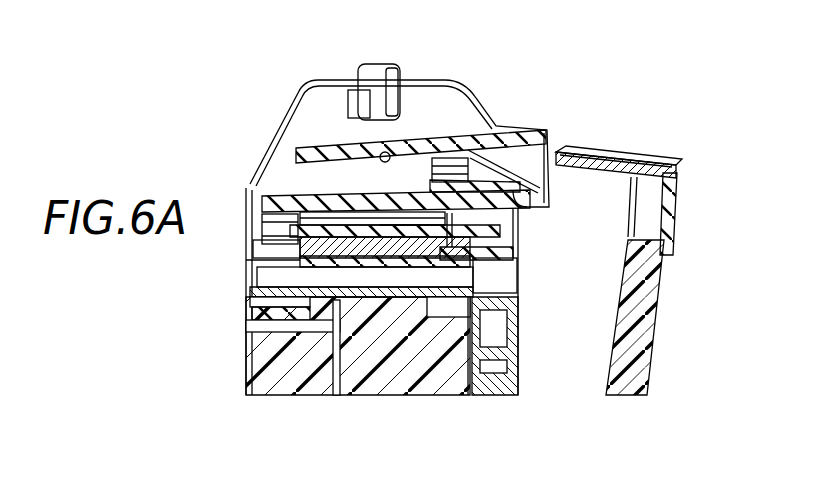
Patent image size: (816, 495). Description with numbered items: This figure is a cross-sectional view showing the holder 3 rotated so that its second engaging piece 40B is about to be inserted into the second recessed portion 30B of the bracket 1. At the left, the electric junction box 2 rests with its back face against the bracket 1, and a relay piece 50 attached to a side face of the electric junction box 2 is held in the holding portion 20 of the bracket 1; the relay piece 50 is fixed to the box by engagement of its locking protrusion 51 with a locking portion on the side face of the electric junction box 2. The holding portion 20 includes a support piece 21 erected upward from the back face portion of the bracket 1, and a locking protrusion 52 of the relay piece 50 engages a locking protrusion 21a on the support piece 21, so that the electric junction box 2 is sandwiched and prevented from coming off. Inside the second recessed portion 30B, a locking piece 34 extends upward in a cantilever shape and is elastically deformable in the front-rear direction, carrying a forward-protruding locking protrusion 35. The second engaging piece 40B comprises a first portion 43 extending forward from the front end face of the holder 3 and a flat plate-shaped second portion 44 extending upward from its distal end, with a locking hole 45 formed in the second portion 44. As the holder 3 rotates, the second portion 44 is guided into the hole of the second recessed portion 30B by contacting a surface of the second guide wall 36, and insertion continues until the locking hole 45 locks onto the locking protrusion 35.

The bracket 1 is at (497, 395).
The electric junction box 2 is at (278, 380).
The holder 3 is at (664, 316).
The holding portion 20 is at (240, 185).
The support piece 21 is at (328, 230).
The locking protrusion 21a is at (370, 240).
The second recessed portion 30B is at (533, 140).
The locking piece 34 is at (430, 147).
The locking protrusion 35 is at (466, 150).
The second guide wall 36 is at (385, 152).
The second engaging piece 40B is at (667, 144).
The first portion 43 is at (679, 190).
The second portion 44 is at (656, 162).
The locking hole 45 is at (601, 150).
The relay piece 50 is at (236, 276).
The locking protrusion 51 is at (378, 298).
The locking protrusion 52 is at (390, 237).